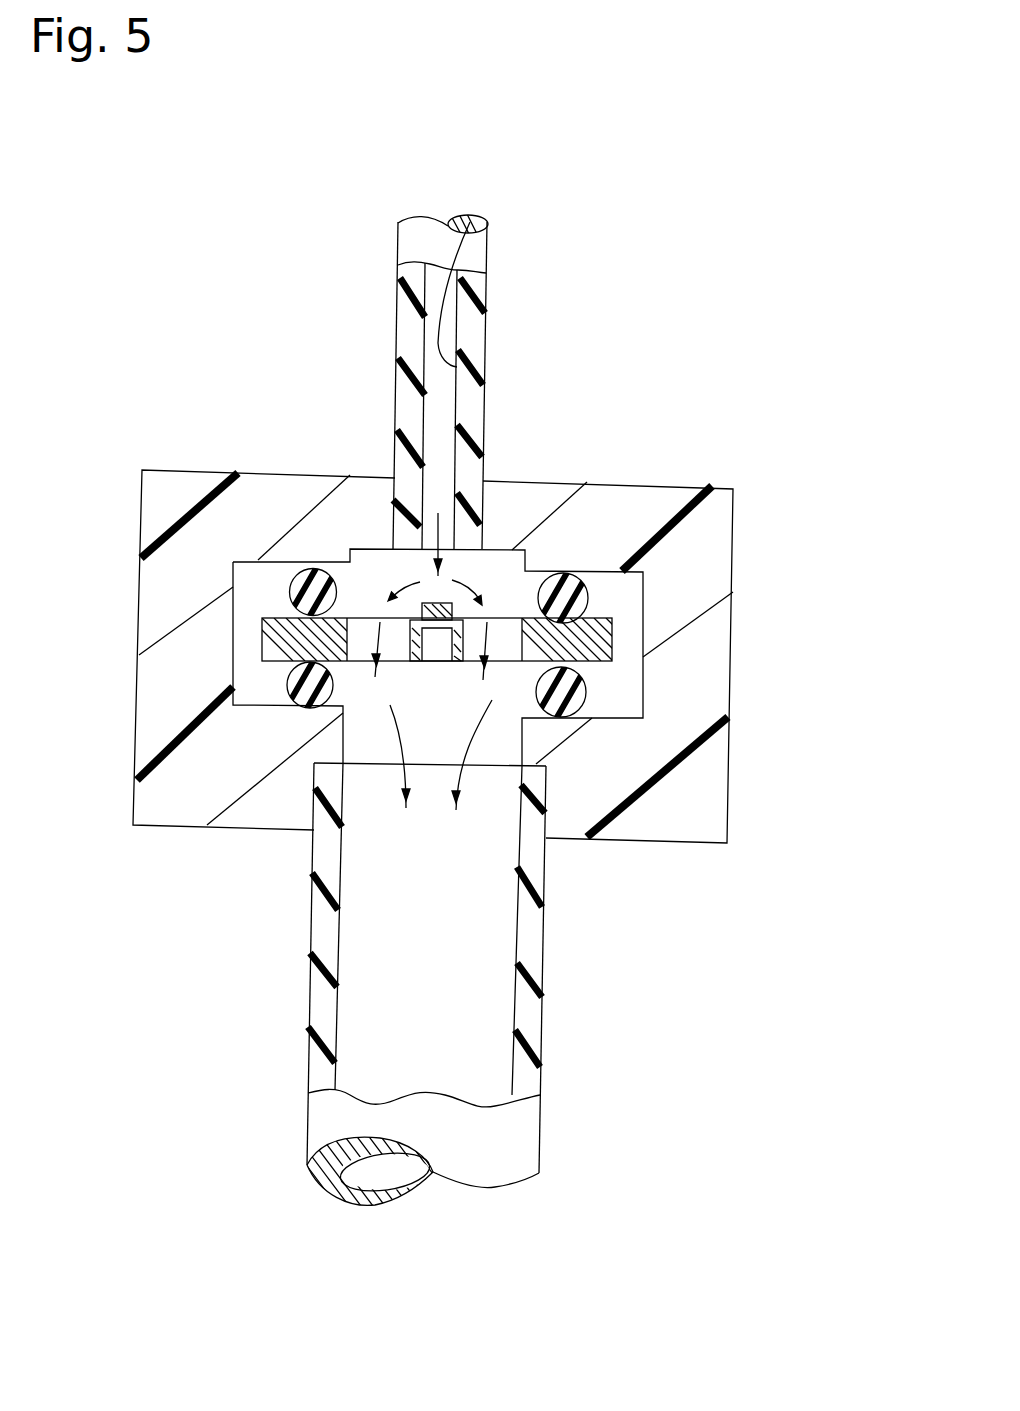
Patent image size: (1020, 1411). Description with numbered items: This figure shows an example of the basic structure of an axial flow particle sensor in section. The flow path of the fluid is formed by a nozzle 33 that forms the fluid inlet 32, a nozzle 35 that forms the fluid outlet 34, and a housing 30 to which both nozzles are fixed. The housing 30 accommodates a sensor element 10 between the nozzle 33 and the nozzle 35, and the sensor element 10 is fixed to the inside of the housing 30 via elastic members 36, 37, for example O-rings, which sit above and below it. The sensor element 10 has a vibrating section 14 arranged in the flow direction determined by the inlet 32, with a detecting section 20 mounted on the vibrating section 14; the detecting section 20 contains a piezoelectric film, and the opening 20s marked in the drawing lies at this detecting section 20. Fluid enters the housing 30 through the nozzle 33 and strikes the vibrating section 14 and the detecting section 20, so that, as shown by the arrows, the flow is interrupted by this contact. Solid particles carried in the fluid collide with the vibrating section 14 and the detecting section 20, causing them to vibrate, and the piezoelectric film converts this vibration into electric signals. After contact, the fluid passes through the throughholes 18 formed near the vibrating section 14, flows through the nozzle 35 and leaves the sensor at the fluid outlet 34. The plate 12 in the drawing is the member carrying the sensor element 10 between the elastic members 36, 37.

The sensor element 10 is at (645, 612).
The orifice plate holder 12 is at (608, 640).
The vibrating section 14 is at (433, 618).
The throughholes 18 is at (592, 596).
The detecting section 20 is at (433, 618).
The orifice 20s is at (445, 614).
The housing 30 is at (167, 788).
The inlet 32 is at (470, 222).
The nozzle 33 is at (472, 313).
The fluid outlet 34 is at (517, 948).
The nozzle 35 is at (523, 1085).
The elastic member 36 is at (290, 586).
The elastic member 37 is at (290, 681).